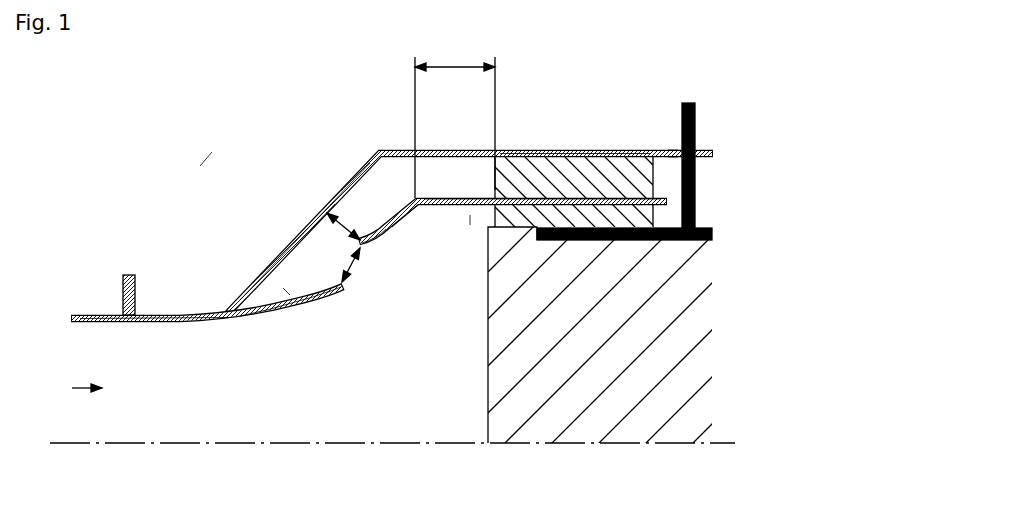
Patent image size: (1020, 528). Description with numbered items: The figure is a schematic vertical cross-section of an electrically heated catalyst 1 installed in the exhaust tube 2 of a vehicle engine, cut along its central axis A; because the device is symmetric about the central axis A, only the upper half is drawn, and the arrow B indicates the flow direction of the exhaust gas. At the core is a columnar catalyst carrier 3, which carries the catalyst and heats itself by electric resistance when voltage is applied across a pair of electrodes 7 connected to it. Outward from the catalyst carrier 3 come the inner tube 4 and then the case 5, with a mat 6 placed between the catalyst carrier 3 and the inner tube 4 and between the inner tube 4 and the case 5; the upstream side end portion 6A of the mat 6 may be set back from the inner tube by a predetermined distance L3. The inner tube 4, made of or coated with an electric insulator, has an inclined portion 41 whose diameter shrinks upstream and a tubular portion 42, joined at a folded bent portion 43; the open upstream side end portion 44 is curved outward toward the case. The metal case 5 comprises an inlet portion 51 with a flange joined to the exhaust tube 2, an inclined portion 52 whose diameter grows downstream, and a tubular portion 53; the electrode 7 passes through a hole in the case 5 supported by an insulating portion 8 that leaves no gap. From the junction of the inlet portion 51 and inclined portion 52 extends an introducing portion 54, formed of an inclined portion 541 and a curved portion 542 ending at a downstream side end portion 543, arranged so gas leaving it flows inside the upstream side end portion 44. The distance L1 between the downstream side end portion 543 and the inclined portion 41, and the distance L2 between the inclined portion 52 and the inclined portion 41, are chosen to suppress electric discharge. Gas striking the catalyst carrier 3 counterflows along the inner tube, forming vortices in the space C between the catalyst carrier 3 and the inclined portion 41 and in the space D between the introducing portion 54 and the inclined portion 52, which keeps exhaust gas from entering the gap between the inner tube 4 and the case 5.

The electrically heated catalyst 1 is at (212, 152).
The exhaust tube 2 is at (95, 315).
The catalyst carrier 3 is at (540, 430).
The inner tube 4 is at (412, 192).
The inclined portion 41 is at (398, 218).
The tubular portion 42 is at (472, 196).
The bent portion 43 is at (418, 205).
The upstream side end portion 44 is at (322, 230).
The case 5 is at (360, 156).
The inlet portion 51 is at (160, 313).
The inclined portion 52 is at (338, 198).
The tubular portion 53 is at (562, 152).
The introducing portion 54 is at (270, 306).
The inclined portion 541 is at (238, 302).
The curved portion 542 is at (288, 258).
The downstream side end portion 543 is at (355, 288).
The mat 6 is at (566, 215).
The upstream side end portion 6A is at (494, 185).
The electrodes 7 is at (696, 128).
The insulating portion 8 is at (672, 152).
The central axis A is at (70, 446).
The arrow B is at (75, 388).
The space C is at (465, 222).
The space D is at (283, 290).
The distance L1 is at (358, 262).
The distance L2 is at (347, 225).
The predetermined distance L3 is at (455, 120).